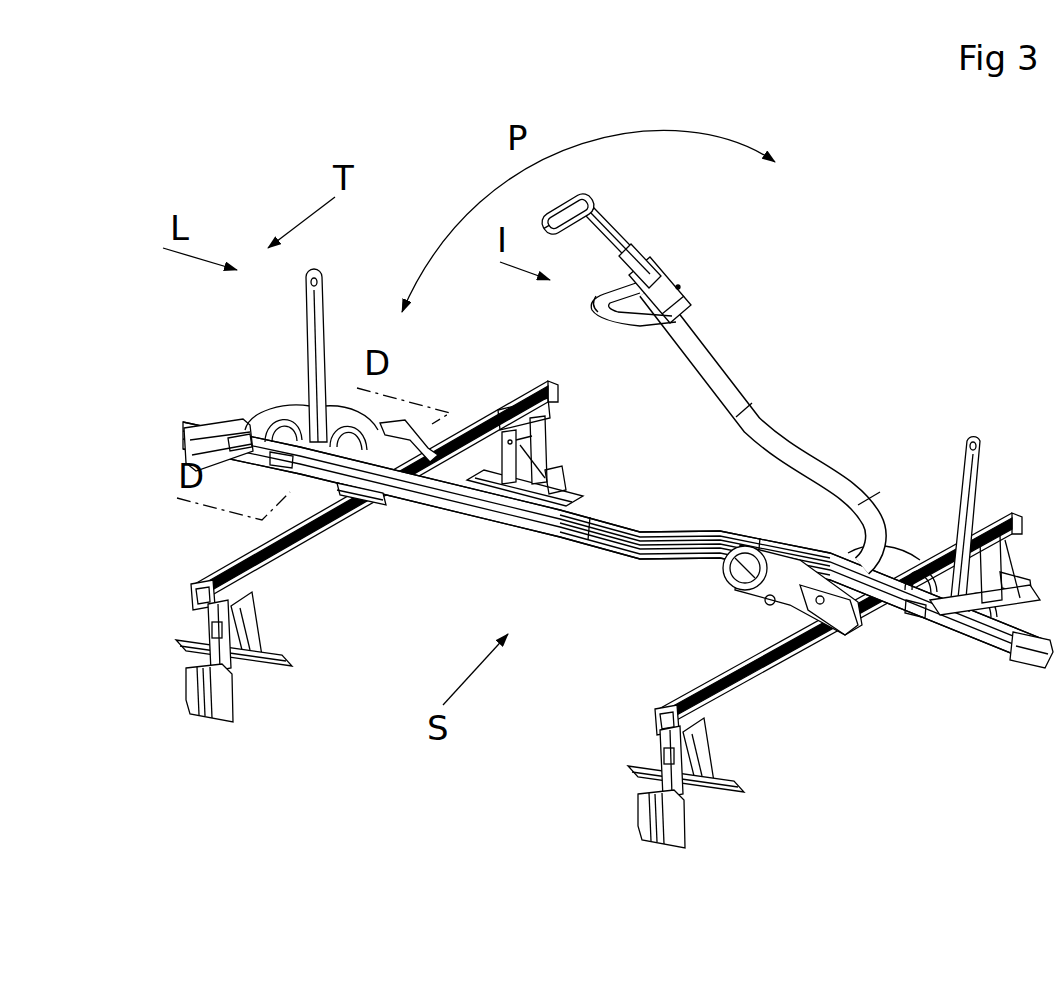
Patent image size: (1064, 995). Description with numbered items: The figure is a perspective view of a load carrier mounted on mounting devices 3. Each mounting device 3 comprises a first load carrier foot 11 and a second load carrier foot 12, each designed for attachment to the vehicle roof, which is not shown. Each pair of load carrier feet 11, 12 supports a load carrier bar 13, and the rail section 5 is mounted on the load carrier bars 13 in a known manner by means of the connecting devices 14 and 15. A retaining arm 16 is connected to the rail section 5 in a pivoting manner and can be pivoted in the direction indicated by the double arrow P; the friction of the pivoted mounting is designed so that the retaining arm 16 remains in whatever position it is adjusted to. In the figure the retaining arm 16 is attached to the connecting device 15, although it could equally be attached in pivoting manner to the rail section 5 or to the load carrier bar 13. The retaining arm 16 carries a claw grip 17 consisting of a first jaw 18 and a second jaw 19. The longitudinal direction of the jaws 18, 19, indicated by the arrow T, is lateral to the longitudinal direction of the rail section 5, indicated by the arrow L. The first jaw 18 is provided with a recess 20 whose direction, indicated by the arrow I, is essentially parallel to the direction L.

The mounting devices 3 is at (162, 600).
The rail section 5 is at (634, 548).
The first load carrier foot 11 is at (618, 475).
The second load carrier foot 12 is at (543, 450).
The load carrier bar 13 is at (312, 537).
The connecting device 14 is at (385, 498).
The connecting device 15 is at (888, 632).
The retaining arm 16 is at (795, 455).
The claw grip 17 is at (603, 333).
The first jaw 18 is at (678, 294).
The second jaw 19 is at (598, 205).
The recess 20 is at (640, 262).